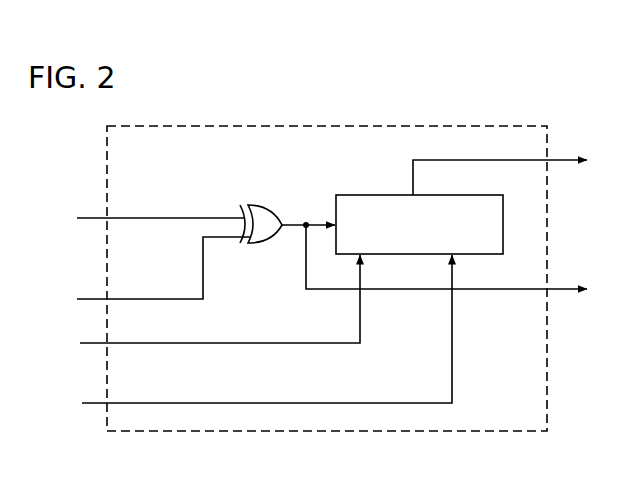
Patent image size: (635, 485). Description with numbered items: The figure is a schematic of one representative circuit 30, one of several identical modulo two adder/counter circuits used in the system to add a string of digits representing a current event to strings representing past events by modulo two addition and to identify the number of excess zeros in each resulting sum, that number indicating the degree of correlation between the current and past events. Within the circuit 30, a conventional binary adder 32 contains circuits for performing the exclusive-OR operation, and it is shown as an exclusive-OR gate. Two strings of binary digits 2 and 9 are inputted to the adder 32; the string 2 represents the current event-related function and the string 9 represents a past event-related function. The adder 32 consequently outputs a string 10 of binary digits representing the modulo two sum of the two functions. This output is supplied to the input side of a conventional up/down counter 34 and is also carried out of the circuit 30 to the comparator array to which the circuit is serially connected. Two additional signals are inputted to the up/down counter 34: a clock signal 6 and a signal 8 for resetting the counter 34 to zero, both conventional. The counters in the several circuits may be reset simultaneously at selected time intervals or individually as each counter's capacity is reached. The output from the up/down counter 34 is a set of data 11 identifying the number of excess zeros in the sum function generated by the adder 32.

The string of binary digits 2 is at (152, 218).
The string of binary digits 9 is at (153, 274).
The clock signal 6 is at (210, 305).
The reset signal 8 is at (258, 335).
The output string of binary digits 10 is at (516, 171).
The output data 11 is at (462, 263).
The circuit 30 is at (427, 124).
The binary adder 32 is at (232, 204).
The up/down counter 34 is at (483, 194).